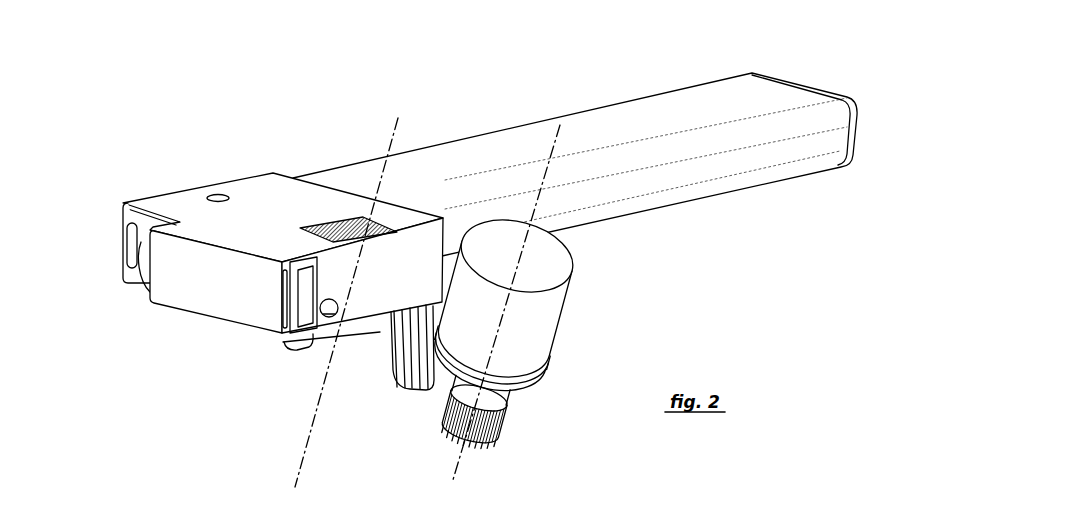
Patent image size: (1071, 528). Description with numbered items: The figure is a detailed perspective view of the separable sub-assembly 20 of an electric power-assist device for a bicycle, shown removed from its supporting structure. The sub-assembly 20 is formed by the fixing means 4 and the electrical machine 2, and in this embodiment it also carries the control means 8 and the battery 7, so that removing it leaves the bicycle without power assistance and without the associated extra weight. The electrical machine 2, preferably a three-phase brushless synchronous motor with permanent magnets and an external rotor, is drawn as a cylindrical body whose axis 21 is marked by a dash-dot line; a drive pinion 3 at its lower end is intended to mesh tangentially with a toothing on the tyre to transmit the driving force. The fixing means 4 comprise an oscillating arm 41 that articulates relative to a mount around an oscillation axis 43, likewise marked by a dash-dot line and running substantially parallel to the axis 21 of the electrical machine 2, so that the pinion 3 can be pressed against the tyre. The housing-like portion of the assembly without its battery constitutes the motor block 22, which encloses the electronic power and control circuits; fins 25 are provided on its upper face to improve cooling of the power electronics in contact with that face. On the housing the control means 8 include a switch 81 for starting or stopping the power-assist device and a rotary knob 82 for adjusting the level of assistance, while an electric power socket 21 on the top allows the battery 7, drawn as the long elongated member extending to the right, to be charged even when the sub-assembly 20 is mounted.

The separable sub-assembly 20 is at (482, 271).
The control means 8 is at (275, 246).
The switch 81 is at (303, 297).
The rotary knob 82 is at (330, 322).
The electric power socket 21 is at (218, 194).
The motor block 22 is at (283, 142).
The fins 25 is at (348, 222).
The electrical machine 2 is at (493, 242).
The drive pinion 3 is at (487, 435).
The fixing means 4 is at (363, 378).
The oscillating arm 41 is at (443, 367).
The oscillation axis 43 is at (298, 465).
The battery 7 is at (608, 120).